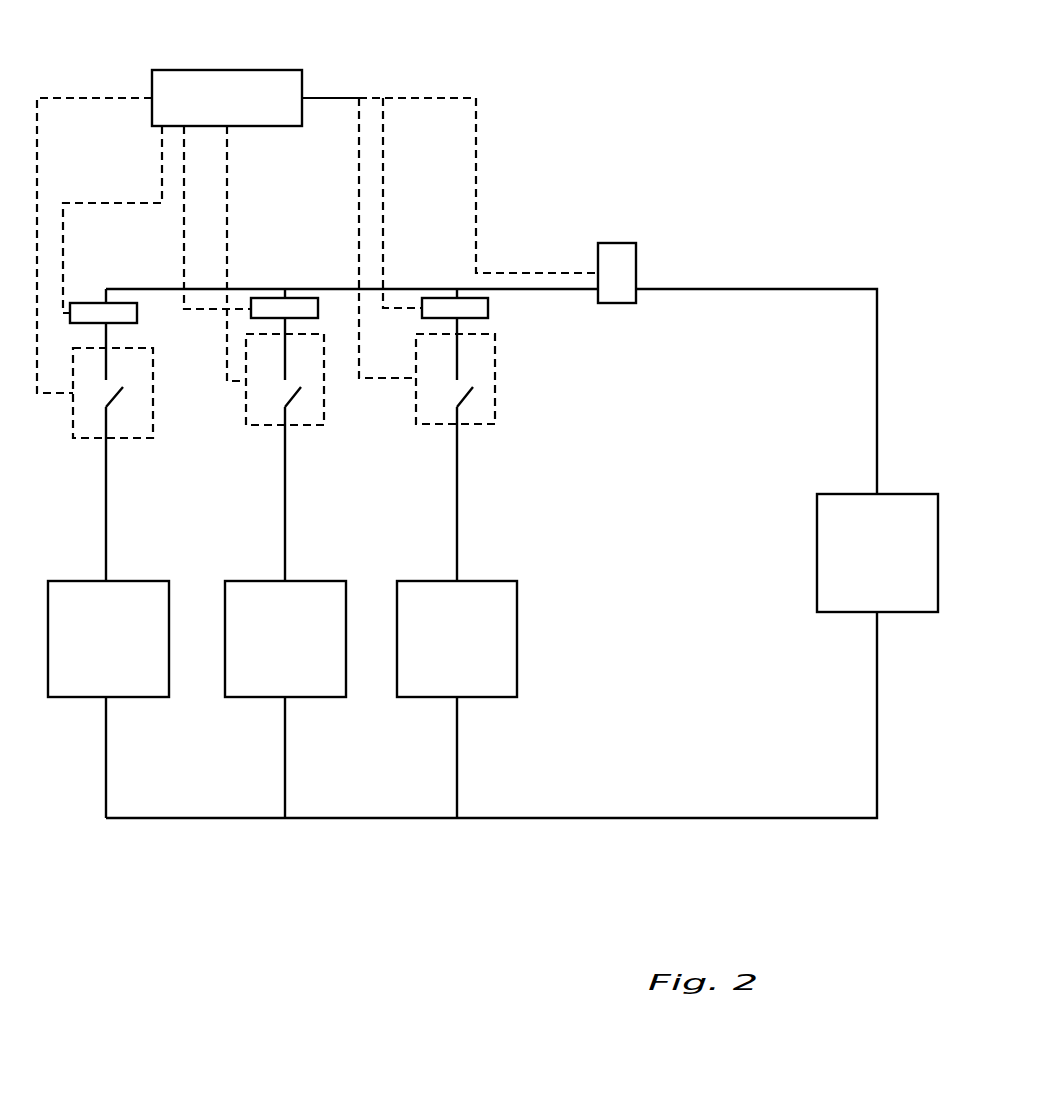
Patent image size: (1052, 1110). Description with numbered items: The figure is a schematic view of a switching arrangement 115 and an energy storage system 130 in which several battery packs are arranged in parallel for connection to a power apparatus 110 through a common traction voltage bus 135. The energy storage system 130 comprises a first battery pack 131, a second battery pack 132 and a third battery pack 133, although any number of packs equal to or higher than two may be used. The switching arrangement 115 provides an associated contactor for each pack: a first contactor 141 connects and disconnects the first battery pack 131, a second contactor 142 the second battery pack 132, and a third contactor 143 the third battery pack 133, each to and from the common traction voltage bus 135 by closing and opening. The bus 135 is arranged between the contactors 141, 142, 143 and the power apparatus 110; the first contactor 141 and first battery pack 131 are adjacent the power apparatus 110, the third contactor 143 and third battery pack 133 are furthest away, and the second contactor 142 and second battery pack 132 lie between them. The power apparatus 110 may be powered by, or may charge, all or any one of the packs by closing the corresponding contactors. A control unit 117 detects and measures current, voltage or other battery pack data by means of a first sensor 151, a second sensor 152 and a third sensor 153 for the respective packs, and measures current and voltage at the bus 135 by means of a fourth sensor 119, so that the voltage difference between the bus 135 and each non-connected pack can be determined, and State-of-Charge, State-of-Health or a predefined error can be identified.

The power apparatus 110 is at (928, 494).
The switching arrangement 115 is at (508, 93).
The control unit 117 is at (275, 68).
The fourth sensor 119 is at (628, 242).
The energy storage system 130 is at (285, 849).
The first battery pack 131 is at (508, 580).
The second battery pack 132 is at (334, 698).
The third battery pack 133 is at (161, 579).
The common traction voltage bus 135 is at (760, 288).
The first contactor 141 is at (512, 432).
The second contactor 142 is at (298, 433).
The third contactor 143 is at (162, 435).
The first sensor 151 is at (436, 298).
The second sensor 152 is at (267, 298).
The third sensor 153 is at (83, 303).